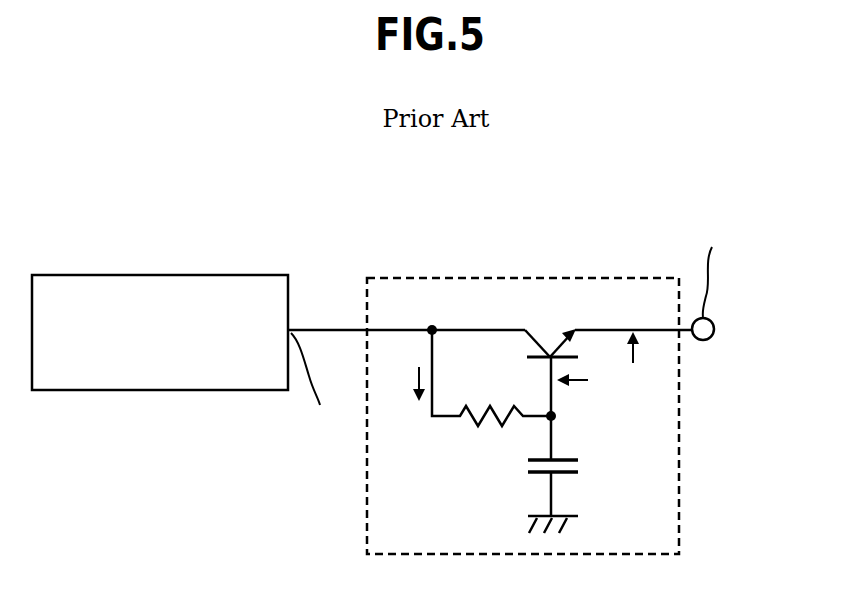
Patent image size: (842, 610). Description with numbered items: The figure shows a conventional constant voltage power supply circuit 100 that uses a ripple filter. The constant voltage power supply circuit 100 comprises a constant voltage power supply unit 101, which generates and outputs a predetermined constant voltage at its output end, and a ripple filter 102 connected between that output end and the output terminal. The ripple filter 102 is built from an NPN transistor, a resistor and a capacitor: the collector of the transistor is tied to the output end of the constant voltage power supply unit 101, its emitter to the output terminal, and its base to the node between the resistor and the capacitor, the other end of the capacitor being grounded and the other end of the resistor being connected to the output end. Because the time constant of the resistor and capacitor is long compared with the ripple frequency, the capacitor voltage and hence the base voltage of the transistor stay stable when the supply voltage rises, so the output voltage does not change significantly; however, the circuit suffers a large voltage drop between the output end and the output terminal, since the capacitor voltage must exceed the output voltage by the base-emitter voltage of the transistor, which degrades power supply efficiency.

The constant voltage power supply circuit 100 is at (385, 227).
The constant voltage power supply unit 101 is at (82, 391).
The ripple filter 102 is at (519, 271).